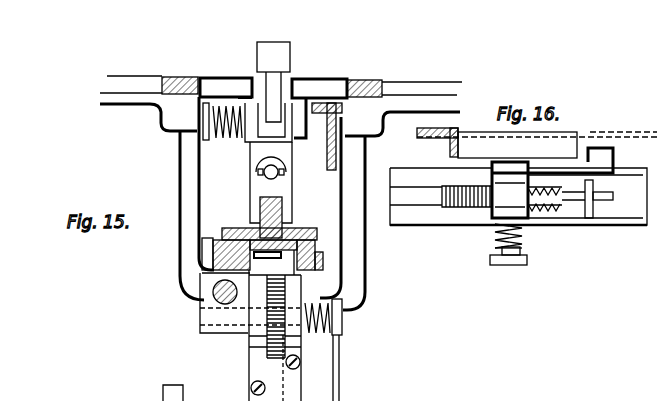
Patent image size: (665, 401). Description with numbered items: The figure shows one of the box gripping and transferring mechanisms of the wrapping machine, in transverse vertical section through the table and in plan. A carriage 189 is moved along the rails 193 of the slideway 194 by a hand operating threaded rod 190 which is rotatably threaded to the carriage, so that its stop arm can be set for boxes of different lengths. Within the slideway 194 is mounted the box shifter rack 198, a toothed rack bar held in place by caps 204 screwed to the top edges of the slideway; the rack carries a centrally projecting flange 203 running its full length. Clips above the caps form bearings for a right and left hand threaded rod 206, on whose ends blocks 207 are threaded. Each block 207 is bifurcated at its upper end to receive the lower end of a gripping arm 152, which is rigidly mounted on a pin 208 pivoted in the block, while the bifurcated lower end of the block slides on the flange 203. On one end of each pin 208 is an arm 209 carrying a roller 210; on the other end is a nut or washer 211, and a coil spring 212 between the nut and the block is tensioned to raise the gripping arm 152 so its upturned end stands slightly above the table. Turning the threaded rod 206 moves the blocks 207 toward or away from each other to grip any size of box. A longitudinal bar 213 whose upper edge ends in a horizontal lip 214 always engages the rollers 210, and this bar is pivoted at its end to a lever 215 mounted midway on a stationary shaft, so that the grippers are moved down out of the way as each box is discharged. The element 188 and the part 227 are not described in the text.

In FIG. 15, the gripping arm 152 is at (275, 52).
In FIG. 16, the gripping arm 152 is at (590, 218).
In FIG. 15, the bracket block 188 is at (215, 323).
In FIG. 15, the carriage 189 is at (230, 329).
In FIG. 15, the hand operating threaded rod 190 is at (213, 292).
In FIG. 15, the rails 193 is at (214, 252).
In FIG. 15, the slideway 194 is at (221, 239).
In FIG. 15, the box shifter rack 198 is at (205, 277).
In FIG. 16, the box shifter rack 198 is at (450, 208).
In FIG. 15, the flange 203 is at (282, 203).
In FIG. 16, the flange 203 is at (415, 195).
In FIG. 15, the caps 204 is at (243, 229).
In FIG. 15, the right and left hand threaded rod 206 is at (263, 164).
In FIG. 16, the right and left hand threaded rod 206 is at (475, 220).
In FIG. 15, the blocks 207 is at (255, 147).
In FIG. 16, the blocks 207 is at (527, 222).
In FIG. 15, the pins 208 is at (240, 96).
In FIG. 16, the pins 208 is at (520, 250).
In FIG. 15, the arm 209 is at (303, 107).
In FIG. 16, the arm 209 is at (551, 168).
In FIG. 15, the roller 210 is at (342, 118).
In FIG. 16, the roller 210 is at (613, 154).
In FIG. 15, the nut or washer 211 is at (197, 123).
In FIG. 16, the nut or washer 211 is at (508, 265).
In FIG. 15, the coil spring 212 is at (228, 112).
In FIG. 16, the coil spring 212 is at (493, 242).
In FIG. 15, the longitudinal bar 213 is at (327, 165).
In FIG. 16, the longitudinal bar 213 is at (417, 133).
In FIG. 15, the horizontal lip 214 is at (333, 101).
In FIG. 16, the horizontal lip 214 is at (450, 154).
In FIG. 15, the lever 215 is at (337, 363).
In FIG. 15, the housing bracket 227 is at (247, 87).